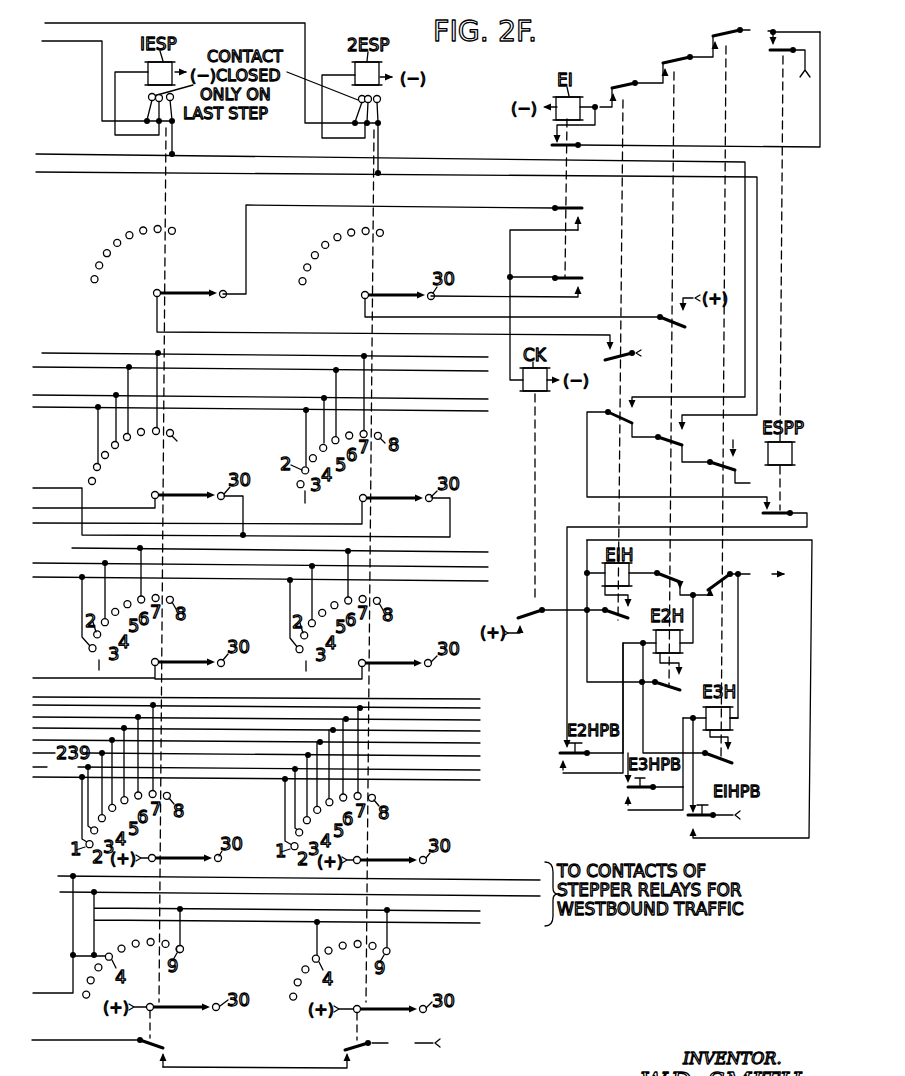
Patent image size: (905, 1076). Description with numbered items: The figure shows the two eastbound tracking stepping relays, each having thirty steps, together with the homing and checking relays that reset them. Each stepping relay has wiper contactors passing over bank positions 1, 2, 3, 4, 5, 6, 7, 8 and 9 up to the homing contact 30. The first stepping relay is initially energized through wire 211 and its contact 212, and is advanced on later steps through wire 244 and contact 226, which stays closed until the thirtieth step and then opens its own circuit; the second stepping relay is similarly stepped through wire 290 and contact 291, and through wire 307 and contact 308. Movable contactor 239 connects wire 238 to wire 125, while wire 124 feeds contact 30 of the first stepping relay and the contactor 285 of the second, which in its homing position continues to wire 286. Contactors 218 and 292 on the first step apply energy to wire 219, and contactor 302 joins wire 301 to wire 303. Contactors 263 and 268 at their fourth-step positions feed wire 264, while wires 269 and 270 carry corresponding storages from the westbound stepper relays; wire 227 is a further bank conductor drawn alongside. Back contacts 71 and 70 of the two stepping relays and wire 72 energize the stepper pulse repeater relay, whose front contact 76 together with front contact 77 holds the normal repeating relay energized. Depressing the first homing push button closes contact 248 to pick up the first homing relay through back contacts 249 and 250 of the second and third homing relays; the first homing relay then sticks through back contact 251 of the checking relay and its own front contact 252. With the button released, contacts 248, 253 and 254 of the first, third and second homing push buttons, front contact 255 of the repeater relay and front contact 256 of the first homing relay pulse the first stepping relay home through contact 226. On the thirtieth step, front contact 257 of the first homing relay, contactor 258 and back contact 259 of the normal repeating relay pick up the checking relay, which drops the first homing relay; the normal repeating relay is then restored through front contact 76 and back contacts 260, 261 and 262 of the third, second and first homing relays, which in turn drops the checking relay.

The wire 290 is at (44, 27).
The wire 211 is at (79, 42).
The contact of stepping relay 1ESP 212 is at (146, 104).
The contact of stepping relay 1ESP 226 is at (174, 115).
The wire 244 is at (84, 153).
The wire 307 is at (92, 173).
The contact of stepping relay 2ESP 291 is at (353, 111).
The contact of stepping relay 2ESP 308 is at (381, 108).
The movable contactor of stepping relay 1ESP 258 is at (185, 291).
The homing step contact 30 is at (225, 297).
The back contact of relay E1 259 is at (569, 207).
The front contact of relay E1H 257 is at (622, 357).
The front contact of relay E1H 256 is at (612, 406).
The front contact of relay ESPP 255 is at (782, 511).
The wire 238 is at (85, 408).
The wire 124 is at (72, 487).
The wire 125 is at (67, 508).
The wire 286 is at (75, 523).
The movable contactor of stepping switch 1ESP 239 is at (185, 488).
The movable contactor of stepping relay 2ESP 285 is at (390, 496).
The wire 301 is at (75, 577).
The movable contactor of stepper relay 2ESP 302 is at (393, 656).
The wire 303 is at (97, 698).
The conductor 227 is at (256, 765).
The wire 219 is at (68, 779).
The movable contactor of stepping relay 1ESP 218 is at (180, 851).
The movable contactor of stepping relay 2ESP 292 is at (392, 853).
The wire 270 is at (487, 873).
The wire 269 is at (527, 896).
The wire 264 is at (45, 992).
The movable contactor of relay 1ESP 263 is at (192, 1003).
The movable contactor of relay 2ESP 268 is at (384, 1007).
The wire 72 is at (60, 1042).
The back contact of stepping switch 1ESP 71 is at (147, 1048).
The back contact of stepping switch 2ESP 70 is at (367, 1051).
The back contact of relay E1H 262 is at (626, 71).
The back contact of relay E2H 261 is at (665, 58).
The back contact of relay E3H 260 is at (714, 34).
The front contact of relay ESPP 76 is at (777, 53).
The front contact of relay E1 77 is at (552, 143).
The back contact of relay CK 251 is at (522, 613).
The front contact of relay E1H 252 is at (617, 617).
The back contact of relay E2H 249 is at (685, 567).
The back contact of relay E3H 250 is at (723, 572).
The contact of push button E2HPB 254 is at (558, 757).
The contact of push button E3HPB 253 is at (627, 790).
The contact of homing push button E1HPB 248 is at (687, 819).
The step one position 1 is at (97, 500).
The step two position 2 is at (94, 466).
The step three position 3 is at (108, 472).
The step four position 4 is at (118, 462).
The step five position 5 is at (131, 453).
The step six position 6 is at (144, 446).
The step seven position 7 is at (155, 441).
The step eight position 8 is at (179, 441).
The step nine position 9 is at (177, 953).